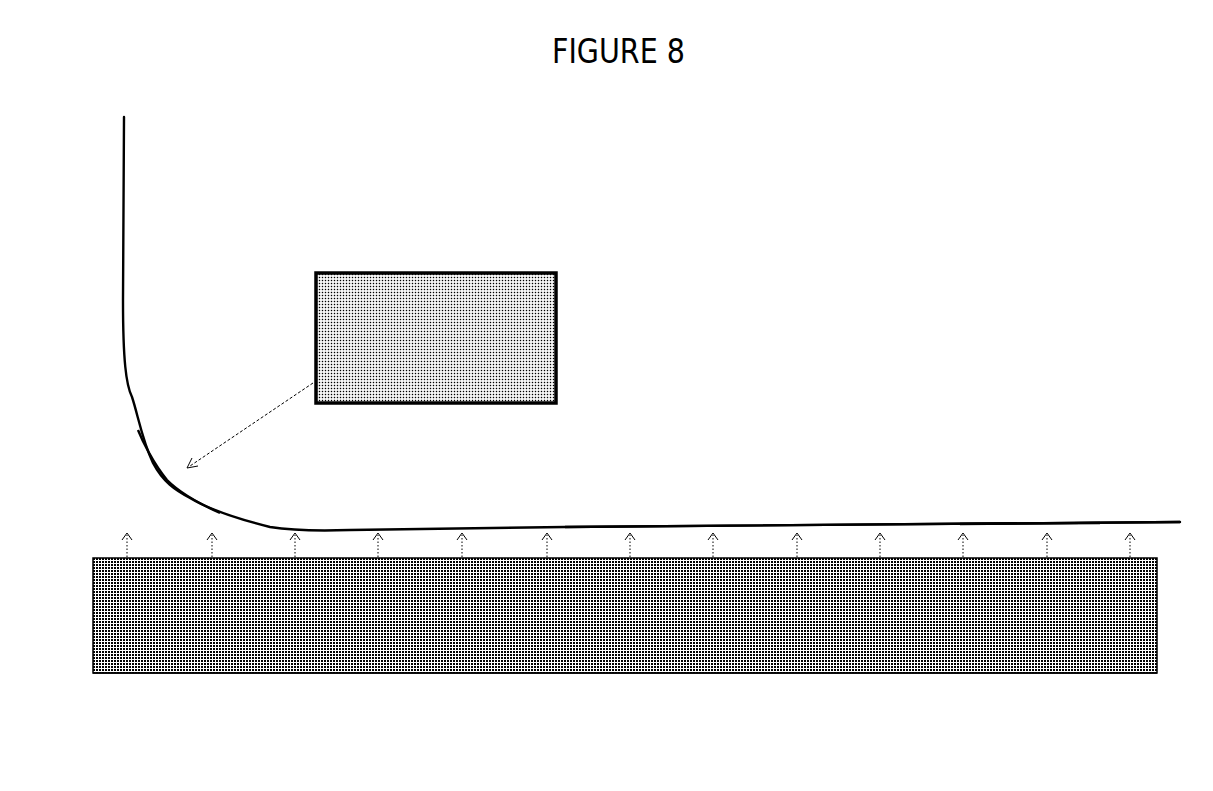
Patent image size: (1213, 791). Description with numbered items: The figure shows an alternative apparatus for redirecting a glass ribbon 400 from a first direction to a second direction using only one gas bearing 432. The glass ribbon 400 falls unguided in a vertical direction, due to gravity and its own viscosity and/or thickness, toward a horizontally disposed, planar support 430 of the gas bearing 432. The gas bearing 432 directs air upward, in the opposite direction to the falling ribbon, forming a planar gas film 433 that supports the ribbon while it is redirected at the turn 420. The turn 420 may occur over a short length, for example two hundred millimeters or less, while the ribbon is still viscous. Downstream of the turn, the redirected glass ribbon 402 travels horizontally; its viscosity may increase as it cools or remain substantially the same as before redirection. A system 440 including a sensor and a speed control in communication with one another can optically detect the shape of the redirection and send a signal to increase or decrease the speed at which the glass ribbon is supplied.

The glass ribbon 400 is at (125, 205).
The redirected glass ribbon 402 is at (565, 527).
The turn 420 is at (160, 487).
The horizontally disposed planar support 430 is at (455, 673).
The gas bearing 432 is at (615, 638).
The gas film 433 is at (1030, 536).
The system including a sensor and a speed control 440 is at (464, 357).